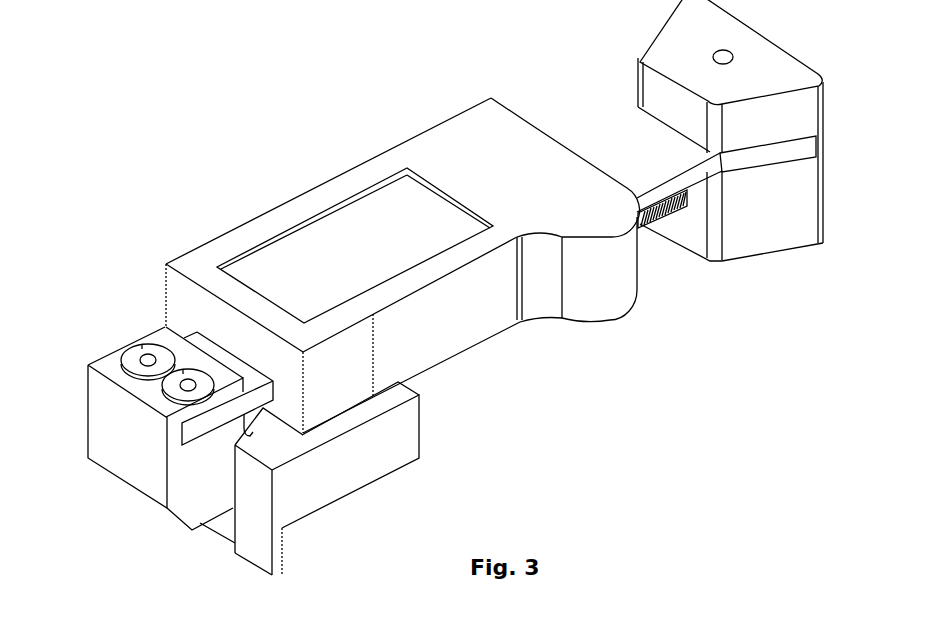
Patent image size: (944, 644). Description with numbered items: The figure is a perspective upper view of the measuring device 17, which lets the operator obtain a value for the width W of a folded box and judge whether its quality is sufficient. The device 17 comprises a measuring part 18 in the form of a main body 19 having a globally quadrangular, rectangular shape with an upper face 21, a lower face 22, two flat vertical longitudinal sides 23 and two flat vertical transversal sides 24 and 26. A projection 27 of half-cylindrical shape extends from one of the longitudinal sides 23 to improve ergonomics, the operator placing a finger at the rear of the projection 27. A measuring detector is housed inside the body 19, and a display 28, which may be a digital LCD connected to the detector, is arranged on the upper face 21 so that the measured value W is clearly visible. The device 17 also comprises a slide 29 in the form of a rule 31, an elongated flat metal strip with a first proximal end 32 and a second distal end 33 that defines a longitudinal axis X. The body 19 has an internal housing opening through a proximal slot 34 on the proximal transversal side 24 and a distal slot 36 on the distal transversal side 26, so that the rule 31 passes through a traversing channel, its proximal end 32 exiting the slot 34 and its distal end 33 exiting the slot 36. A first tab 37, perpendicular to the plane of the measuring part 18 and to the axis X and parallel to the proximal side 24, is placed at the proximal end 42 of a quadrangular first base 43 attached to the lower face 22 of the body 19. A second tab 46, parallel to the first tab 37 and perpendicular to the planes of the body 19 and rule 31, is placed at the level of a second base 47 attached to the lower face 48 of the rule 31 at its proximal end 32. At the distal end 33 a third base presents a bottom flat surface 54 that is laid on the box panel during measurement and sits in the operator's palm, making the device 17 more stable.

The measuring device 17 is at (278, 75).
The measuring part 18 is at (491, 92).
The main body 19 is at (208, 242).
The upper face 21 is at (453, 132).
The lower face 22 is at (457, 354).
The flat vertical longitudinal side 23 is at (480, 312).
The proximal flat vertical transversal side 24 is at (177, 295).
The distal flat vertical transversal side 26 is at (540, 124).
The projection 27 is at (637, 292).
The display 28 is at (347, 232).
The slide 29 is at (610, 106).
The rule 31 is at (692, 183).
The first proximal end 32 is at (182, 438).
The second distal end 33 is at (770, 146).
The proximal slot 34 is at (268, 398).
The distal slot 36 is at (613, 176).
The first tab 37 is at (272, 575).
The proximal end of first base 42 is at (292, 528).
The first element or base 43 is at (420, 450).
The second tab 46 is at (215, 535).
The second element or base 47 is at (88, 432).
The lower face of the rule 48 is at (220, 430).
The bottom flat surface 54 is at (803, 250).